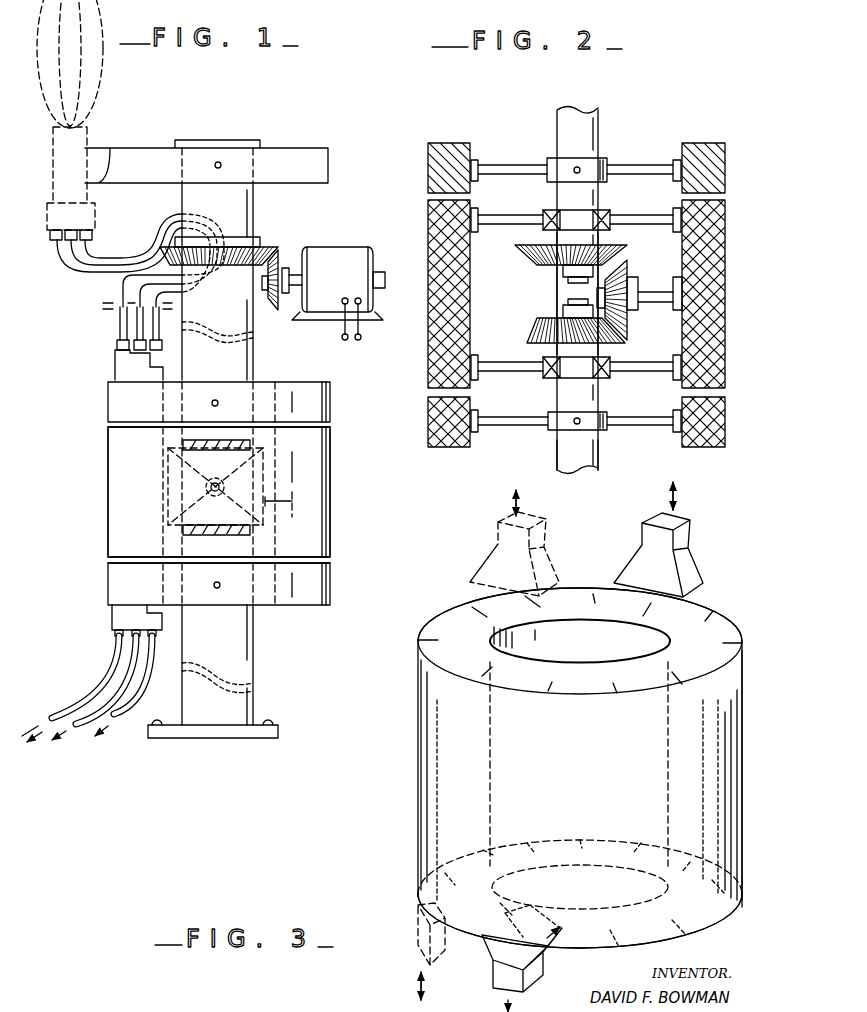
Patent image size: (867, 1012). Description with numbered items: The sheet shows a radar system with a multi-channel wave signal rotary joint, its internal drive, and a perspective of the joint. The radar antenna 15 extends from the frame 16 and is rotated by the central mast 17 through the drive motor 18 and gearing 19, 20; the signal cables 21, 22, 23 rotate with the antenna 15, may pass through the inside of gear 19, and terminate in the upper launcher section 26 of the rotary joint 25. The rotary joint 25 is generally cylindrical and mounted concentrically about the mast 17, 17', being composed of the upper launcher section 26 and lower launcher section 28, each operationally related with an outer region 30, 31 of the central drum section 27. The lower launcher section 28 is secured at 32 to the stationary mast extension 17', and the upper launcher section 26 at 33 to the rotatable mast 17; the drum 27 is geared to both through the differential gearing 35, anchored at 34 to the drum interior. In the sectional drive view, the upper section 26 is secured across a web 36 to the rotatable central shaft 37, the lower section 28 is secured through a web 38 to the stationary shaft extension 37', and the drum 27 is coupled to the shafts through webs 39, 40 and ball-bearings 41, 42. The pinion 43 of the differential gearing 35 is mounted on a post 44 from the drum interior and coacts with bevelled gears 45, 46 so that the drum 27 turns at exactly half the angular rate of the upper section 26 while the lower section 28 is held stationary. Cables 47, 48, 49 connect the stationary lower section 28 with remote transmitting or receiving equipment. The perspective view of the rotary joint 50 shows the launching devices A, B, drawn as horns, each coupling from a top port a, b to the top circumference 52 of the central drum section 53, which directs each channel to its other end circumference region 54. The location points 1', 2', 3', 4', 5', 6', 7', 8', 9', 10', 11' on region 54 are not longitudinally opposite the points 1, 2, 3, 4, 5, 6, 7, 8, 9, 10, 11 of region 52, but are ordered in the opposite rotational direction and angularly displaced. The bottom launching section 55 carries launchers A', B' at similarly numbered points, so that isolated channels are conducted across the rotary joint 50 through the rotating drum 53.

In FIG. 1, the radar antenna 15 is at (96, 94).
In FIG. 1, the frame 16 is at (328, 167).
In FIG. 1, the central shaft or mast 17 is at (240, 281).
In FIG. 1, the mast extension 17' is at (245, 665).
In FIG. 1, the drive motor 18 is at (348, 285).
In FIG. 1, the gear 19 is at (258, 238).
In FIG. 1, the gearing 20 is at (272, 309).
In FIG. 1, the signal wave guide or cable 21 is at (118, 314).
In FIG. 1, the signal wave guide or cable 22 is at (140, 329).
In FIG. 1, the signal wave guide or cable 23 is at (132, 346).
In FIG. 1, the rotary joint 25 is at (108, 467).
In FIG. 2, the rotary joint 25 is at (728, 255).
In FIG. 1, the upper launcher section 26 is at (108, 402).
In FIG. 2, the upper launcher section 26 is at (708, 172).
In FIG. 1, the central drum section 27 is at (128, 525).
In FIG. 2, the central drum section 27 is at (717, 320).
In FIG. 1, the lower launcher section 28 is at (125, 581).
In FIG. 2, the lower launcher section 28 is at (715, 423).
In FIG. 1, the outer region 30 is at (292, 430).
In FIG. 1, the outer region 31 is at (293, 565).
In FIG. 1, the securing point 32 is at (220, 583).
In FIG. 1, the securing point 33 is at (218, 401).
In FIG. 1, the anchor 34 is at (168, 508).
In FIG. 1, the differential gearing 35 is at (292, 503).
In FIG. 2, the differential gearing 35 is at (518, 310).
In FIG. 2, the web 36 is at (533, 171).
In FIG. 2, the central shaft 37 is at (597, 290).
In FIG. 2, the stationary shaft extension 37' is at (607, 457).
In FIG. 2, the web 38 is at (487, 428).
In FIG. 2, the web 39 is at (519, 223).
In FIG. 2, the web 40 is at (493, 372).
In FIG. 2, the ball-bearing 41 is at (614, 213).
In FIG. 2, the ball-bearing 42 is at (613, 382).
In FIG. 2, the pinion 43 is at (630, 262).
In FIG. 2, the post 44 is at (653, 308).
In FIG. 2, the bevelled gear 45 is at (533, 260).
In FIG. 2, the bevelled gear 46 is at (537, 336).
In FIG. 1, the wave guide or cable 47 is at (103, 662).
In FIG. 1, the wave guide or cable 48 is at (108, 690).
In FIG. 1, the wave guide or cable 49 is at (131, 698).
In FIG. 3, the rotary joint 50 is at (413, 780).
In FIG. 3, the top circumference 52 is at (710, 629).
In FIG. 3, the central drum section 53 is at (730, 793).
In FIG. 3, the bottom circumference region 54 is at (710, 926).
In FIG. 3, the bottom launching section 55 is at (468, 991).
In FIG. 3, the location point 1 is at (643, 615).
In FIG. 3, the location point 2 is at (697, 624).
In FIG. 3, the location point 3 is at (721, 644).
In FIG. 3, the location point 4 is at (671, 667).
In FIG. 3, the location point 5 is at (614, 677).
In FIG. 3, the location point 6 is at (554, 677).
In FIG. 3, the location point 7 is at (496, 663).
In FIG. 3, the location point 8 is at (439, 639).
In FIG. 3, the location point 9 is at (487, 618).
In FIG. 3, the location point 10 is at (544, 607).
In FIG. 3, the location point 11 is at (597, 605).
In FIG. 3, the location point 1' is at (532, 919).
In FIG. 3, the location point 2' is at (611, 928).
In FIG. 3, the location point 3' is at (672, 918).
In FIG. 3, the location point 4' is at (707, 892).
In FIG. 3, the location point 5' is at (678, 874).
In FIG. 3, the location point 6' is at (634, 857).
In FIG. 3, the location point 7' is at (584, 853).
In FIG. 3, the location point 8' is at (537, 855).
In FIG. 3, the location point 9' is at (495, 862).
In FIG. 3, the location point 10' is at (455, 885).
In FIG. 3, the location point 11' is at (491, 903).
In FIG. 3, the launching device A is at (658, 539).
In FIG. 3, the launching device B is at (514, 543).
In FIG. 3, the top port a is at (668, 522).
In FIG. 3, the top port b is at (525, 524).
In FIG. 3, the launching device A' is at (533, 970).
In FIG. 3, the launching device B' is at (401, 951).